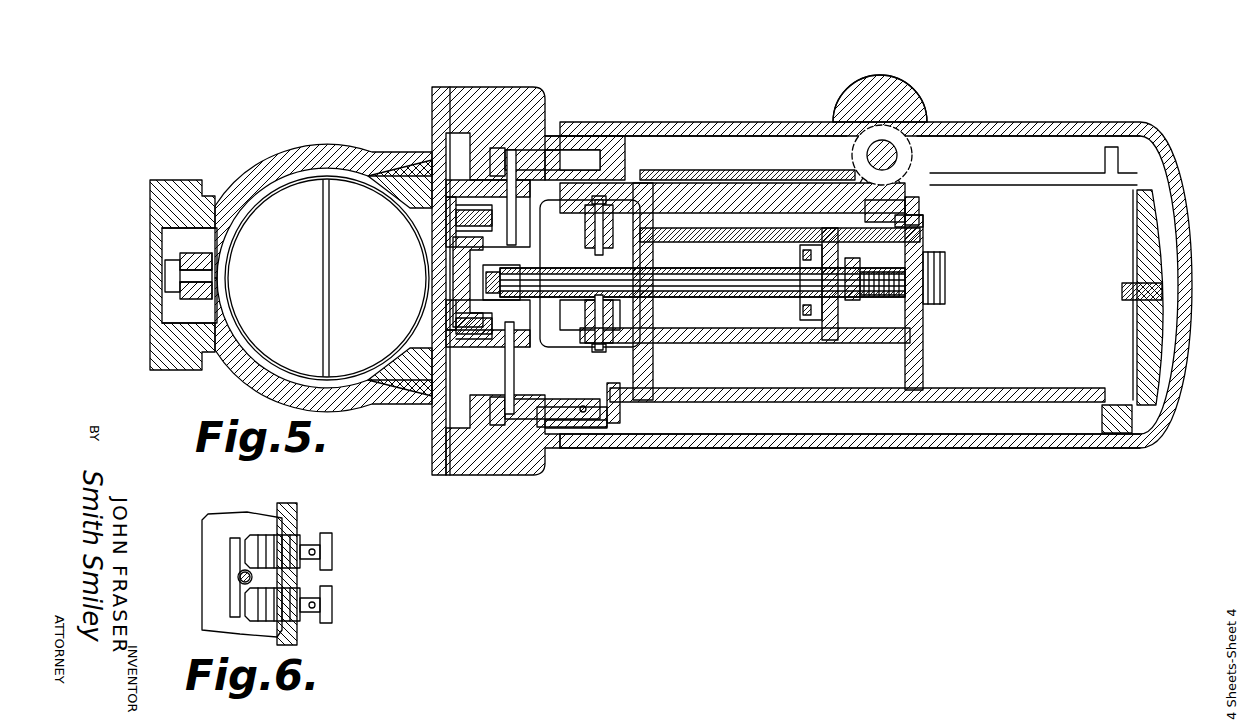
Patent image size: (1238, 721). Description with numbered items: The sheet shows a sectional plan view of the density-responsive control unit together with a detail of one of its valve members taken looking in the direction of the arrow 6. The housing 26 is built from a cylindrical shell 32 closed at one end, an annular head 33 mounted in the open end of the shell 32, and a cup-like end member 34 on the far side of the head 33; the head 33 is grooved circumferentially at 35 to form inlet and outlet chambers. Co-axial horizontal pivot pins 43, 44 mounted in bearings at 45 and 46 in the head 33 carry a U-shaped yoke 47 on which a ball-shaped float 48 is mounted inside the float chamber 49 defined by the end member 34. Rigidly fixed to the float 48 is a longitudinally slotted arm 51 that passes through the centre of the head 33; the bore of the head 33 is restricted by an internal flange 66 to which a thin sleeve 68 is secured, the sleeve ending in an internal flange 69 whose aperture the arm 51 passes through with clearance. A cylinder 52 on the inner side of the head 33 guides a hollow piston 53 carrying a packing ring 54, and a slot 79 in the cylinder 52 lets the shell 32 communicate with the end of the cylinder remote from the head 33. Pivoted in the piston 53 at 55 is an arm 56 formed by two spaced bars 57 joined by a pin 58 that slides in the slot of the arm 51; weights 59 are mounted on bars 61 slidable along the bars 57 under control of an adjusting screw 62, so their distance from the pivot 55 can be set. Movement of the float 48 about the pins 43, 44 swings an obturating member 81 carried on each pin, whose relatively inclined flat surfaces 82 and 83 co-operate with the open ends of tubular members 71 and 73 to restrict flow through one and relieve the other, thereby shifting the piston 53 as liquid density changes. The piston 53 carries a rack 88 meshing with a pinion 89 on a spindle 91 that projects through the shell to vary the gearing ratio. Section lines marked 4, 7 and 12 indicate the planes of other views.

In FIG. 5, the housing 26 is at (1042, 456).
In FIG. 5, the cylindrical shell 32 is at (868, 442).
In FIG. 5, the annular head 33 is at (560, 430).
In FIG. 5, the cup-like end member 34 is at (297, 150).
In FIG. 5, the circumferential groove 35 is at (430, 430).
In FIG. 5, the pivot pin 43 is at (432, 147).
In FIG. 6, the pivot pin 43 is at (240, 580).
In FIG. 5, the pivot pin 44 is at (453, 335).
In FIG. 6, the pivot pin 44 is at (245, 577).
In FIG. 5, the bearing 45 is at (433, 203).
In FIG. 5, the bearing 46 is at (450, 362).
In FIG. 5, the U-shaped yoke 47 is at (453, 253).
In FIG. 5, the ball-shaped float 48 is at (292, 283).
In FIG. 5, the float chamber 49 is at (270, 192).
In FIG. 5, the slotted arm 51 is at (545, 292).
In FIG. 5, the cylinder 52 is at (788, 400).
In FIG. 5, the piston 53 is at (910, 347).
In FIG. 5, the packing ring 54 is at (650, 390).
In FIG. 5, the pivot 55 is at (852, 340).
In FIG. 5, the arm 56 is at (798, 312).
In FIG. 5, the spaced bars 57 is at (779, 268).
In FIG. 5, the pin 58 is at (516, 268).
In FIG. 5, the weights 59 is at (612, 210).
In FIG. 5, the bars 61 is at (742, 265).
In FIG. 5, the adjusting screw 62 is at (900, 270).
In FIG. 5, the internal flange 66 is at (540, 340).
In FIG. 5, the thin sleeve 68 is at (547, 252).
In FIG. 5, the internal flange 69 is at (457, 307).
In FIG. 6, the tubular member 71 is at (333, 548).
In FIG. 6, the tubular member 73 is at (288, 604).
In FIG. 5, the slot 79 is at (1045, 173).
In FIG. 5, the obturating member 81 is at (432, 140).
In FIG. 6, the obturating member 81 is at (237, 566).
In FIG. 6, the inclined flat surface 82 is at (233, 547).
In FIG. 6, the inclined flat surface 83 is at (233, 605).
In FIG. 5, the rack 88 is at (712, 184).
In FIG. 5, the pinion 89 is at (850, 125).
In FIG. 5, the spindle 91 is at (897, 152).
In FIG. 5, the section line 12 is at (508, 90).
In FIG. 5, the section line 7 is at (583, 122).
In FIG. 5, the arrow 6 is at (507, 485).
In FIG. 5, the section line 4 is at (108, 278).